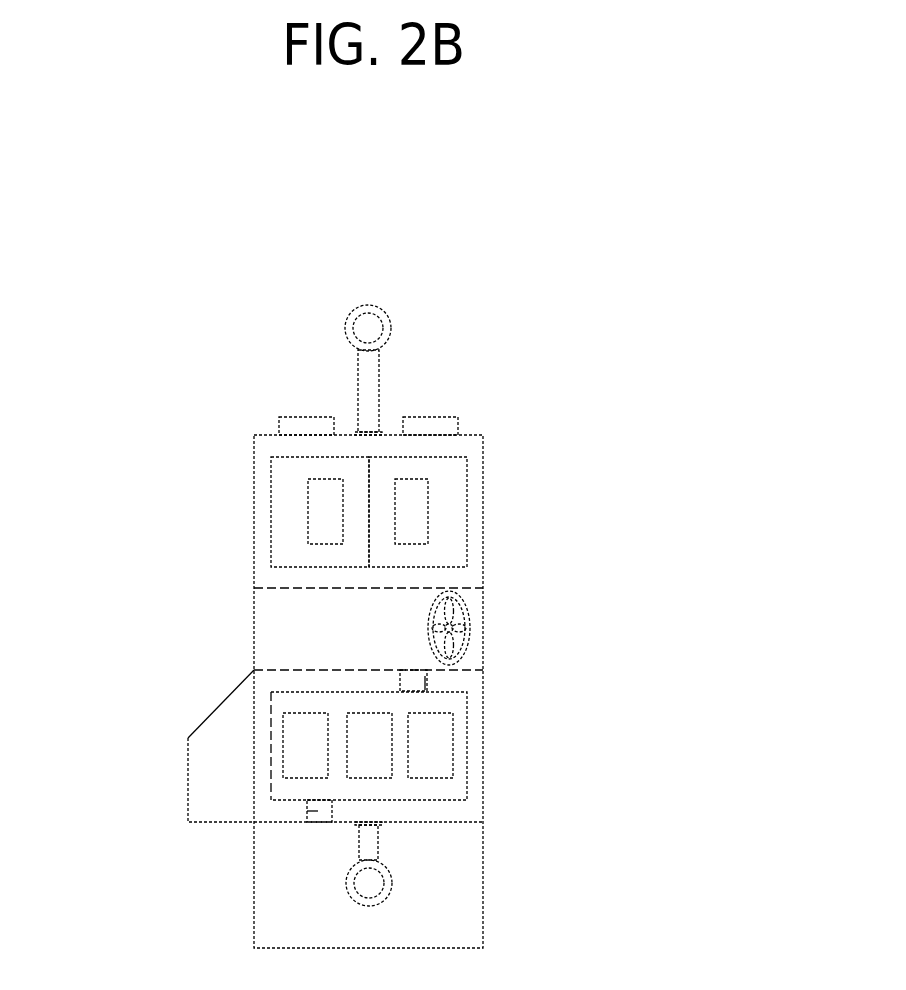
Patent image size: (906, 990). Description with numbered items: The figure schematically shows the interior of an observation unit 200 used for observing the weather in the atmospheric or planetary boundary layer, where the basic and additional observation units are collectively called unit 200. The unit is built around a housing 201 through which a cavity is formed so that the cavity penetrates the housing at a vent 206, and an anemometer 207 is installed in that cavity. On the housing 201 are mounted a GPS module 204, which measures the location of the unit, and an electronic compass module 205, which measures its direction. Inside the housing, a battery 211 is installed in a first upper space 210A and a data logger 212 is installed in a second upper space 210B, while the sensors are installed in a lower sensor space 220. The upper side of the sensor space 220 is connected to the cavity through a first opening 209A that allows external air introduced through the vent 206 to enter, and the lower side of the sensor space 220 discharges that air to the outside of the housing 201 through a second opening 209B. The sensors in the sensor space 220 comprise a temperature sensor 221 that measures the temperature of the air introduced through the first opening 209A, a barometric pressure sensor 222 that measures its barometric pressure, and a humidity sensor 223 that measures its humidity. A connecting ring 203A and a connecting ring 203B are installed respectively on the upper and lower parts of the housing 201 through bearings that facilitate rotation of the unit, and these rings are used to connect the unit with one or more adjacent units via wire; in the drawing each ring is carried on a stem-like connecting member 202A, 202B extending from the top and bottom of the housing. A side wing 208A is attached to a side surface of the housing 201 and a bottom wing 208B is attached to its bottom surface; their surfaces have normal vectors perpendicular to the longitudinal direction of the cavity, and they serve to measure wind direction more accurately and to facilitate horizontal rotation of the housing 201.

The observation unit 200 is at (696, 237).
The housing 201 is at (254, 465).
The first connecting rod 202A is at (382, 433).
The second connecting rod 202B is at (380, 825).
The connecting ring 203A is at (390, 328).
The connecting ring 203B is at (391, 885).
The GPS module 204 is at (279, 427).
The electronic compass module 205 is at (458, 427).
The vent 206 is at (453, 648).
The anemometer 207 is at (449, 612).
The side wing 208A is at (206, 777).
The bottom wing 208B is at (277, 887).
The 1-st opening 209A is at (425, 683).
The 2-nd opening 209B is at (318, 811).
The (1_1)-st space 210A is at (271, 505).
The (1_2)-nd space 210B is at (467, 505).
The battery 211 is at (325, 534).
The data logger 212 is at (412, 534).
The 2-nd space 220 is at (468, 745).
The temperature sensor 221 is at (304, 728).
The barometric pressure sensor 222 is at (368, 720).
The humidity sensor 223 is at (431, 768).